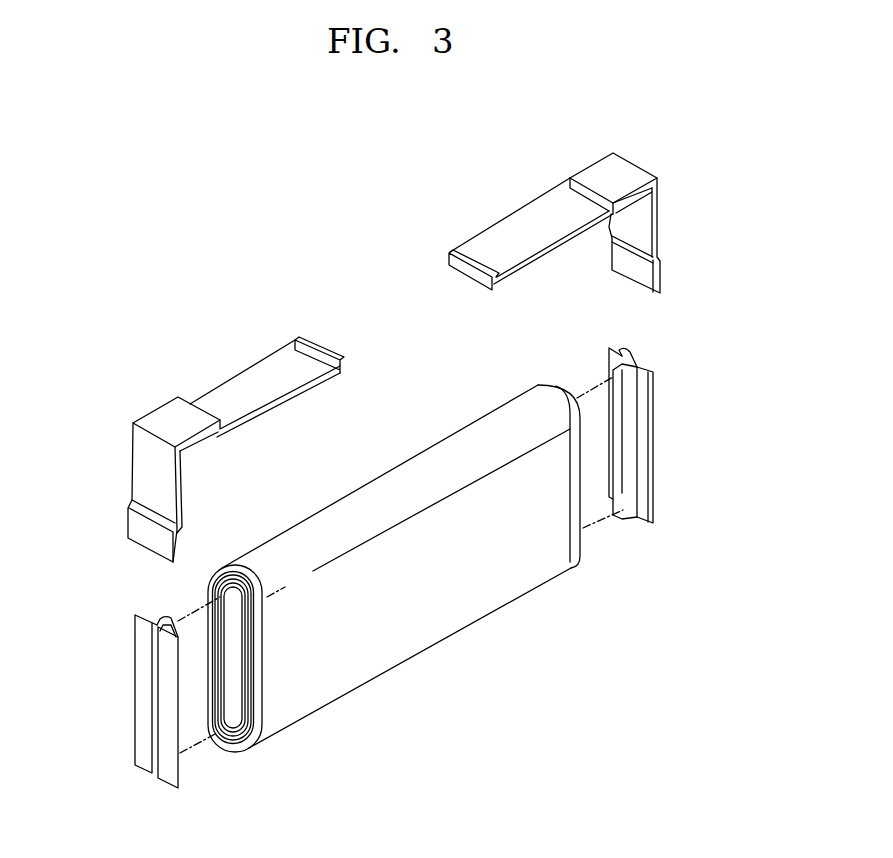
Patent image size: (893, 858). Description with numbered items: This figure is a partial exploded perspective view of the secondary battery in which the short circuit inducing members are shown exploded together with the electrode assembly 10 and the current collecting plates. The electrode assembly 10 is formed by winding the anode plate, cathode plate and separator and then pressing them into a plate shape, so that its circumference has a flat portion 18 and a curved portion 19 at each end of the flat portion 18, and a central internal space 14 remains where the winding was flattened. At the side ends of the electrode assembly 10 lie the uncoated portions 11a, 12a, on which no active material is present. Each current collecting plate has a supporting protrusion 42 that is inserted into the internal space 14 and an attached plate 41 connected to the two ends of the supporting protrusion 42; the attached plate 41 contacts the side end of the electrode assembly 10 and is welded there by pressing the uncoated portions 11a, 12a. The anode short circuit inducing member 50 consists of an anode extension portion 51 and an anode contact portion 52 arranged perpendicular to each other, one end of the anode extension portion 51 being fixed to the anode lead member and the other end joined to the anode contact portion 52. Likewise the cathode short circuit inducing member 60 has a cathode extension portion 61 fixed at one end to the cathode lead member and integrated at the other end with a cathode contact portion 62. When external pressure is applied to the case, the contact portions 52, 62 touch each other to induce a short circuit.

The electrode assembly 10 is at (400, 595).
The uncoated portion 11a is at (257, 738).
The uncoated portion 12a is at (575, 562).
The internal space 14 is at (222, 733).
The flat portion 18 is at (427, 582).
The curved portion 19 is at (393, 670).
The attached plate 41 is at (138, 715).
The supporting protrusion 42 is at (173, 622).
The anode short circuit inducing member 50 is at (199, 430).
The anode extension portion 51 is at (262, 375).
The anode contact portion 52 is at (295, 340).
The cathode short circuit inducing member 60 is at (583, 220).
The cathode extension portion 61 is at (518, 228).
The cathode contact portion 62 is at (455, 250).